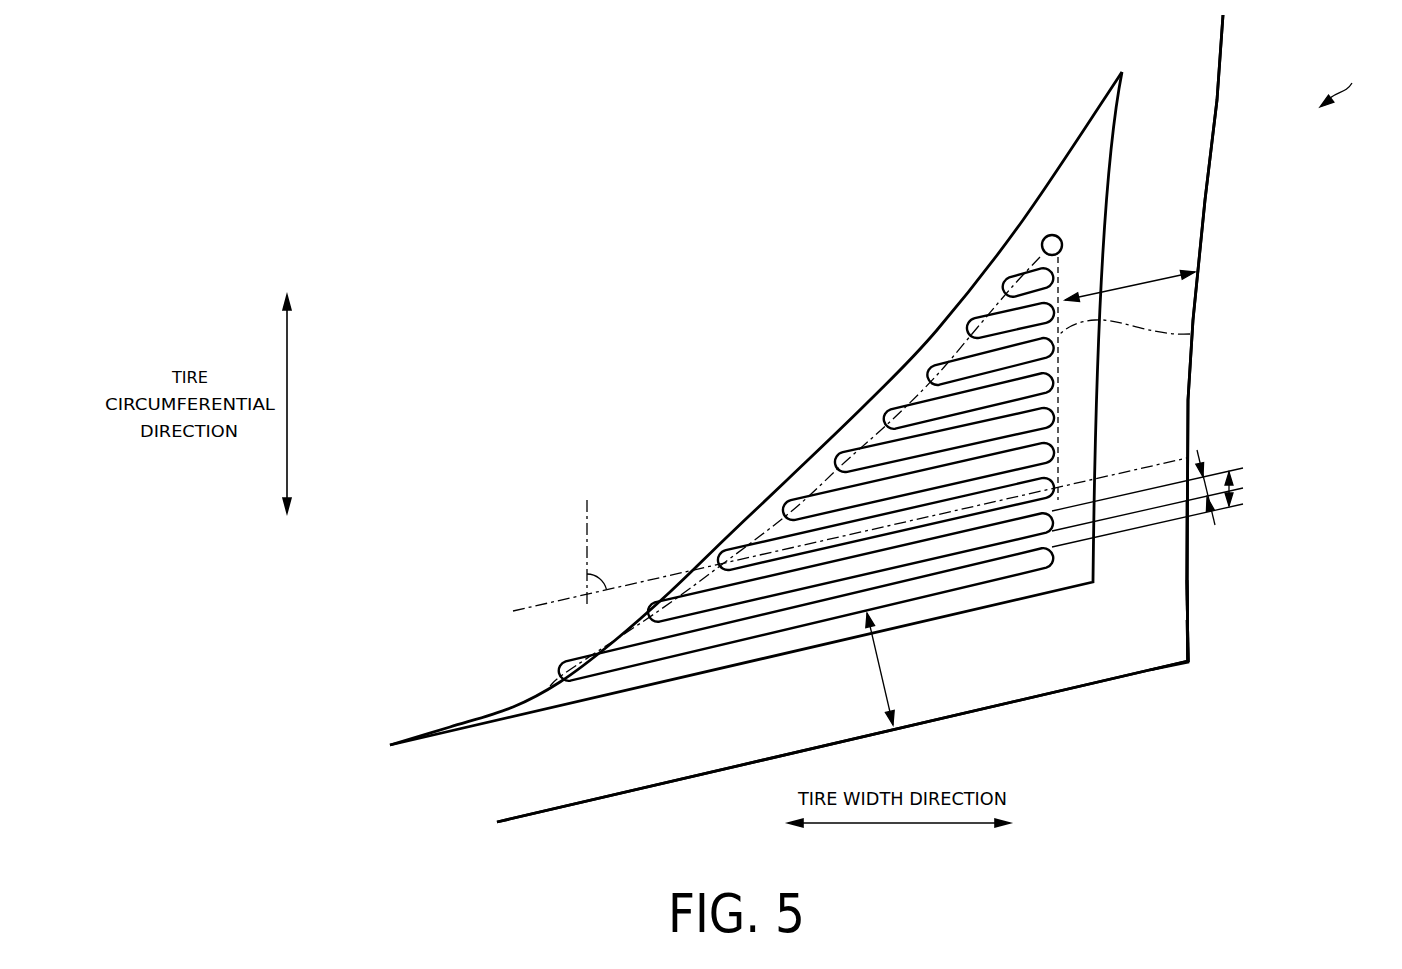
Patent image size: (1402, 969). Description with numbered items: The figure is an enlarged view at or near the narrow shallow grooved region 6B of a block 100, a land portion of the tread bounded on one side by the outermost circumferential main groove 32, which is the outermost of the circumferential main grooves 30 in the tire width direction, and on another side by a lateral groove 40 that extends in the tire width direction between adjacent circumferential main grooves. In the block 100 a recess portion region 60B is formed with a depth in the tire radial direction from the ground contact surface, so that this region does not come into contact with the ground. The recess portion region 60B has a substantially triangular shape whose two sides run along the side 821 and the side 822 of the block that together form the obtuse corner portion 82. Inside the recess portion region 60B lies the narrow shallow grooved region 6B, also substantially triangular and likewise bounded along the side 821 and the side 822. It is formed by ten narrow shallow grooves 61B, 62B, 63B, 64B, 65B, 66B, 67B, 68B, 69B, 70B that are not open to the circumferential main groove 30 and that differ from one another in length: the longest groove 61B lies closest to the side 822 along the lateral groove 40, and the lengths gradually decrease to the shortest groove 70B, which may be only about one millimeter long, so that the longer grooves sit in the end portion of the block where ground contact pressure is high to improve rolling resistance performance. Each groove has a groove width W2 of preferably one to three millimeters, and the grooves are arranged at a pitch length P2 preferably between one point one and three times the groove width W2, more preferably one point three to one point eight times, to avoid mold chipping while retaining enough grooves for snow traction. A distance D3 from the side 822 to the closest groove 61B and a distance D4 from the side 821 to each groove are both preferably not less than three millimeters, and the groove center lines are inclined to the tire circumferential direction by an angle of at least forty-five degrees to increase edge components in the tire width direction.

The block 100 is at (1345, 83).
The outermost circumferential main groove 32 is at (1226, 86).
The circumferential main groove 30 is at (1205, 338).
The lateral groove 40 is at (1190, 663).
The recess portion region 60B is at (1093, 163).
The narrow shallow grooved region 6B is at (1190, 334).
The narrow shallow groove 61B is at (558, 672).
The narrow shallow groove 62B is at (647, 612).
The narrow shallow groove 63B is at (734, 550).
The narrow shallow groove 64B is at (785, 505).
The narrow shallow groove 65B is at (836, 460).
The narrow shallow groove 66B is at (884, 417).
The narrow shallow groove 67B is at (928, 373).
The narrow shallow groove 68B is at (968, 327).
The narrow shallow groove 69B is at (1004, 284).
The narrow shallow groove 70B is at (1042, 243).
The obtuse corner portion 82 is at (1176, 620).
The side 821 is at (1188, 573).
The side 822 is at (1072, 688).
The distance D3 is at (880, 668).
The distance D4 is at (1167, 275).
The groove width W2 is at (1207, 476).
The pitch length P2 is at (1235, 487).